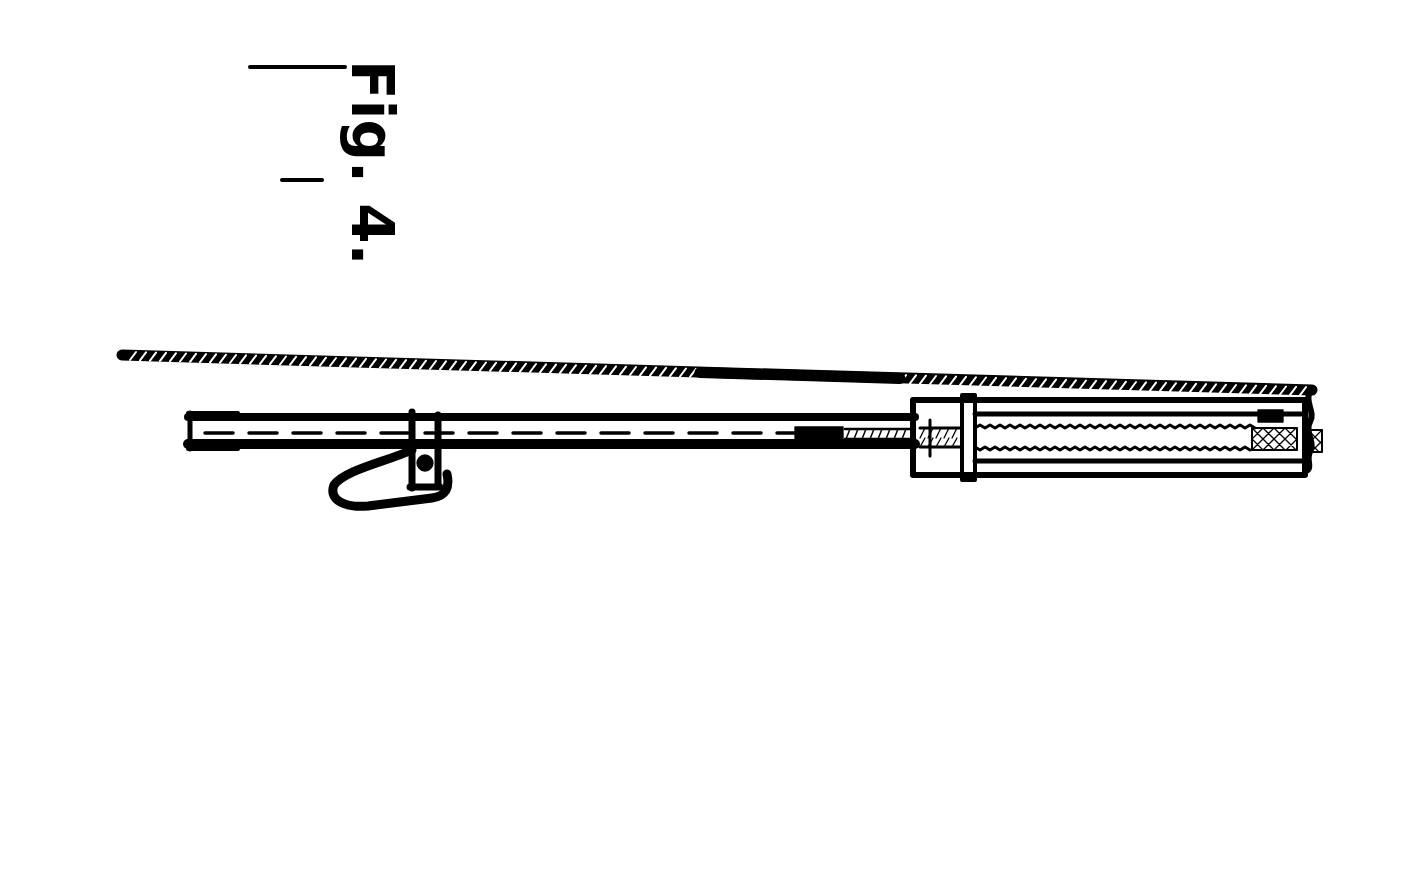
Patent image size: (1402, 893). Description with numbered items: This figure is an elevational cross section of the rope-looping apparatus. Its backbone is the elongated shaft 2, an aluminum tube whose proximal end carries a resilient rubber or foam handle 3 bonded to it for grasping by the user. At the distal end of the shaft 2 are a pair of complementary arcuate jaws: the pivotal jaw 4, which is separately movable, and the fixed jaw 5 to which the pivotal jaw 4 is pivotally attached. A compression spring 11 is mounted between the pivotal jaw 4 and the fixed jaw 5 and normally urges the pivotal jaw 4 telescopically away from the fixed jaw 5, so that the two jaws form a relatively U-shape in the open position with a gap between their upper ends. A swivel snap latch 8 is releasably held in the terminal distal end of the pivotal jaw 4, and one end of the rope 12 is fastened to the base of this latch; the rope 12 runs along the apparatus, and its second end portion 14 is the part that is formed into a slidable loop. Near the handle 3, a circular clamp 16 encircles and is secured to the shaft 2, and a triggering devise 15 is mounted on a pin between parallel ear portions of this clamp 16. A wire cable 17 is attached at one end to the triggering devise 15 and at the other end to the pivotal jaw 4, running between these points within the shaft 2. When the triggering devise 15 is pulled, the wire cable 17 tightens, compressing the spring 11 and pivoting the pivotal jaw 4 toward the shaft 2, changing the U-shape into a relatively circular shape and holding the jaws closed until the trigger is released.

The shaft 2 is at (690, 523).
The handle 3 is at (268, 493).
The pivotal jaw 4 is at (1047, 517).
The fixed jaw 5 is at (1200, 513).
The swivel snap latch 8 is at (1357, 503).
The compression spring 11 is at (606, 474).
The rope 12 is at (790, 362).
The second end portion 14 is at (121, 346).
The triggering devise 15 is at (428, 537).
The circular clamp 16 is at (533, 498).
The wire cable 17 is at (840, 515).